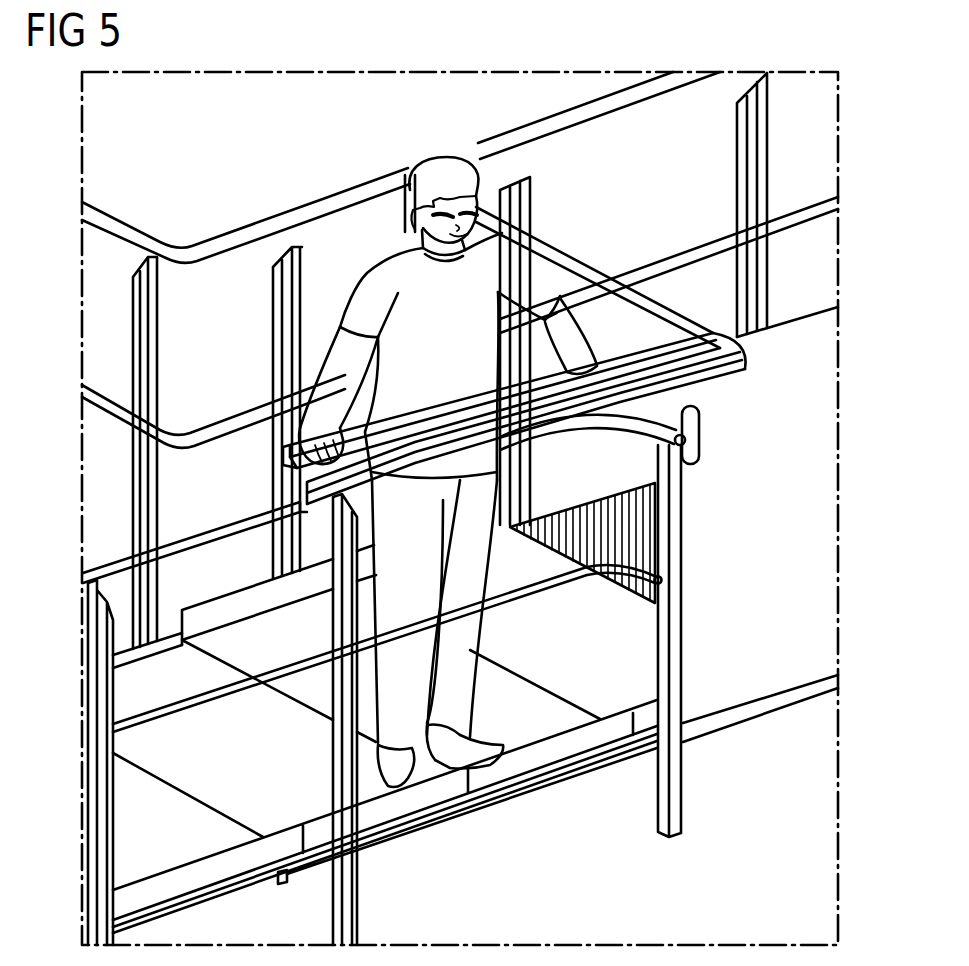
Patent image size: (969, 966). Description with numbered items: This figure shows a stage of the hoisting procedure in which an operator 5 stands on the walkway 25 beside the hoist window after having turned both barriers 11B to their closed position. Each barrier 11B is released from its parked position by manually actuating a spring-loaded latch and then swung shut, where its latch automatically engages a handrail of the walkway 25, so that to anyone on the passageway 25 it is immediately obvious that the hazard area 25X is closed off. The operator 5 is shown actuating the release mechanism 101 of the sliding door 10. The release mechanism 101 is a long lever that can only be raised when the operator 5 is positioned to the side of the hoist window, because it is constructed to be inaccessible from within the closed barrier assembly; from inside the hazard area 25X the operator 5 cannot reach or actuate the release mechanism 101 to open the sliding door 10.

The operator 5 is at (373, 275).
The sliding door 10 is at (812, 491).
The barrier 11B is at (579, 273).
The release mechanism 101 is at (293, 446).
The walkway 25 is at (128, 693).
The hazard area 25X is at (630, 572).